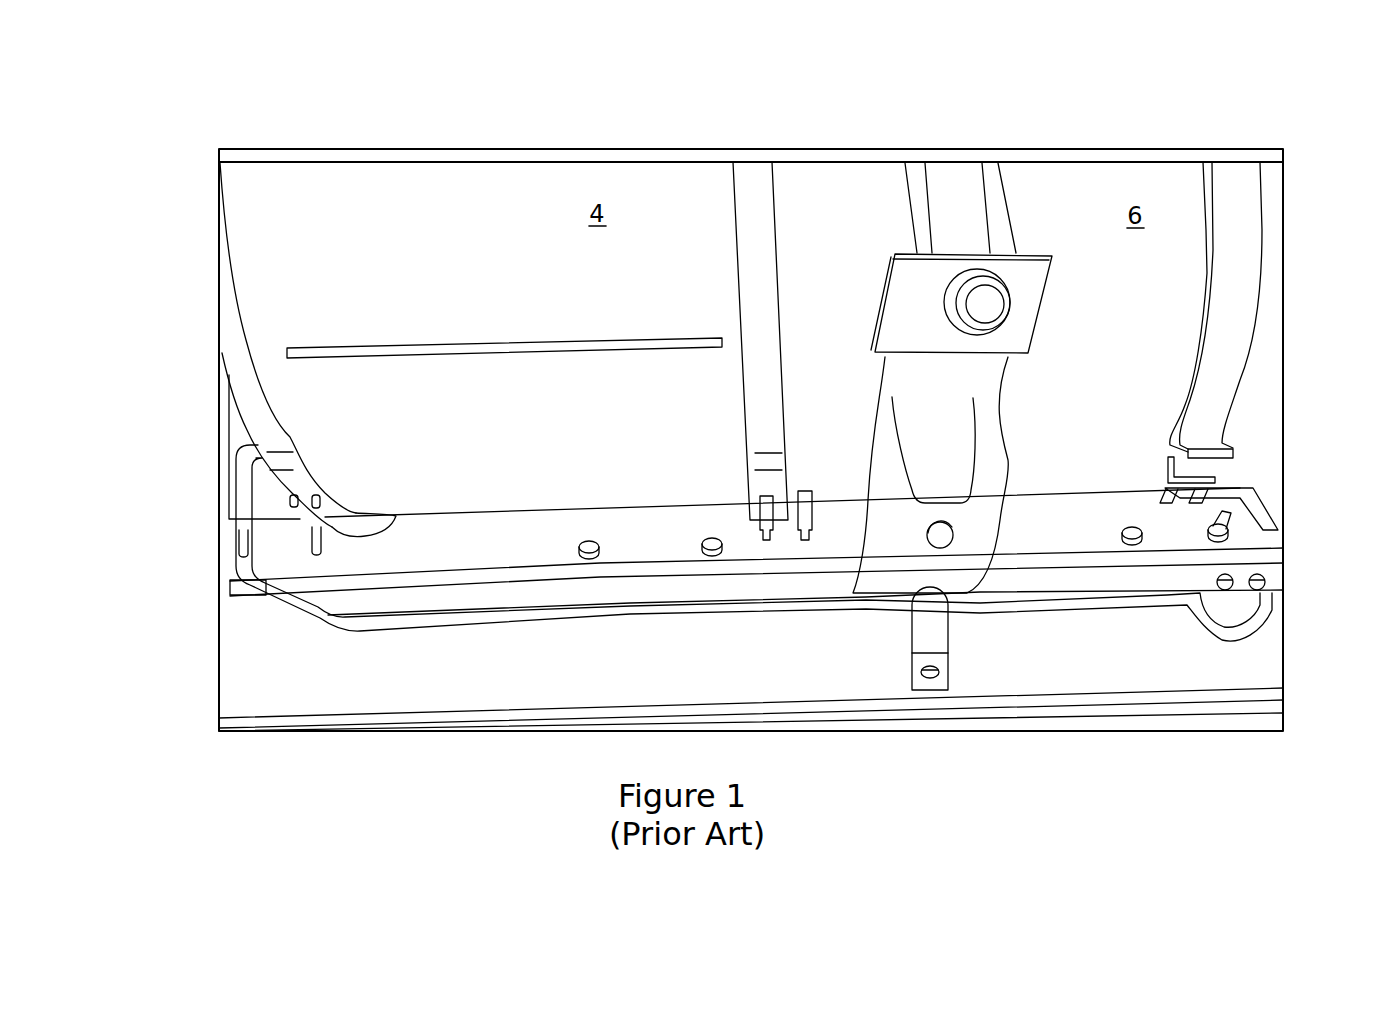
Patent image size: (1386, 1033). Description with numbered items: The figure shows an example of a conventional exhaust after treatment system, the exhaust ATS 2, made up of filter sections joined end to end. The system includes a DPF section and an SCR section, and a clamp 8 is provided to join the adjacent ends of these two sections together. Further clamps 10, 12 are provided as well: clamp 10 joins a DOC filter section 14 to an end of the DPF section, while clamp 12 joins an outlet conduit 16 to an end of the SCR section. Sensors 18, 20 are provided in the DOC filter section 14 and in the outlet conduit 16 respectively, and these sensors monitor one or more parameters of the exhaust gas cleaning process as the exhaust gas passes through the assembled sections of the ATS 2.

The exhaust ATS 2 is at (1046, 101).
The clamp 8 is at (757, 182).
The clamp 10 is at (240, 345).
The clamp 12 is at (1238, 263).
The DOC filter section 14 is at (237, 425).
The outlet conduit 16 is at (1258, 400).
The sensor 18 is at (263, 473).
The sensor 20 is at (805, 541).